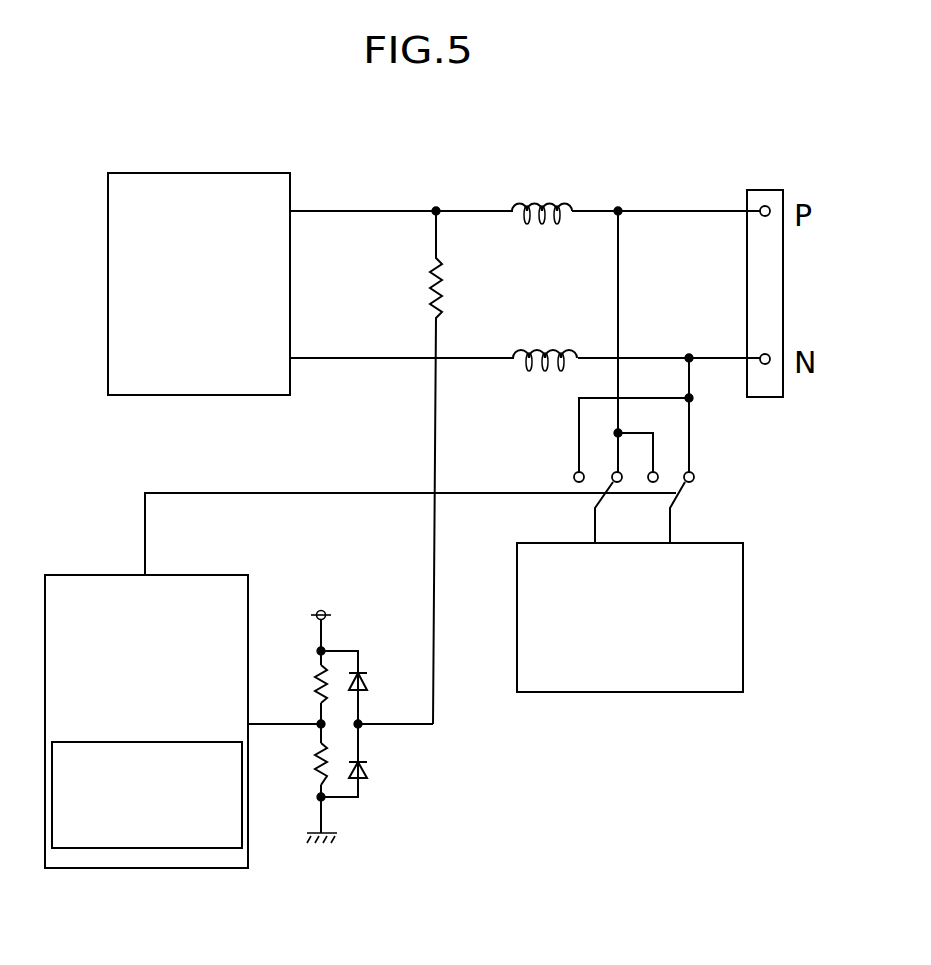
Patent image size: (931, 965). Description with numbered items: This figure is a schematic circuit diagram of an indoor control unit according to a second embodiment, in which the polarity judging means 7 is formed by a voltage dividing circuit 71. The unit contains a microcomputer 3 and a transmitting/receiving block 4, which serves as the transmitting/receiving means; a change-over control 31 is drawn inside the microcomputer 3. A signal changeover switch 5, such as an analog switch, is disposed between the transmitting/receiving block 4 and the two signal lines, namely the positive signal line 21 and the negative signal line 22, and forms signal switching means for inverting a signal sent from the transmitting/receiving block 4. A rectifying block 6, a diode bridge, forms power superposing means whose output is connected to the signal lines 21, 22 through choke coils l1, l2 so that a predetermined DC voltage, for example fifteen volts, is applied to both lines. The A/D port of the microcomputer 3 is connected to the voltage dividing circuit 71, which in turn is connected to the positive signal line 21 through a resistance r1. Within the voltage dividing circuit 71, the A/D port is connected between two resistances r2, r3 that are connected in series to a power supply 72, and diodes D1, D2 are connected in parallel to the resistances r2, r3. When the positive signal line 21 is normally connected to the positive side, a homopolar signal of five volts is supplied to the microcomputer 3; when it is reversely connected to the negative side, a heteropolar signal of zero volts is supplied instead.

The microcomputer 3 is at (146, 763).
The change-over control 31 is at (77, 848).
The transmitting/receiving block 4 is at (635, 692).
The signal changeover switch 5 is at (693, 484).
The rectifying block 6 is at (200, 172).
The polarity judging means 7 is at (386, 691).
The voltage dividing circuit 71 is at (348, 671).
The power supply 72 is at (322, 609).
The positive signal line 21 is at (685, 211).
The negative signal line 22 is at (345, 360).
The choke coil l1 is at (543, 204).
The choke coil l2 is at (546, 350).
The resistance r1 is at (425, 284).
The resistance r2 is at (316, 690).
The resistance r3 is at (311, 768).
The diode D1 is at (366, 684).
The diode D2 is at (369, 771).